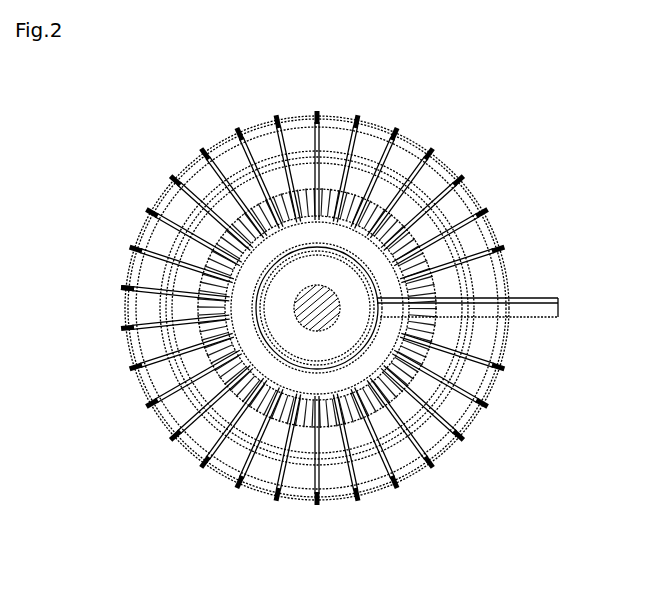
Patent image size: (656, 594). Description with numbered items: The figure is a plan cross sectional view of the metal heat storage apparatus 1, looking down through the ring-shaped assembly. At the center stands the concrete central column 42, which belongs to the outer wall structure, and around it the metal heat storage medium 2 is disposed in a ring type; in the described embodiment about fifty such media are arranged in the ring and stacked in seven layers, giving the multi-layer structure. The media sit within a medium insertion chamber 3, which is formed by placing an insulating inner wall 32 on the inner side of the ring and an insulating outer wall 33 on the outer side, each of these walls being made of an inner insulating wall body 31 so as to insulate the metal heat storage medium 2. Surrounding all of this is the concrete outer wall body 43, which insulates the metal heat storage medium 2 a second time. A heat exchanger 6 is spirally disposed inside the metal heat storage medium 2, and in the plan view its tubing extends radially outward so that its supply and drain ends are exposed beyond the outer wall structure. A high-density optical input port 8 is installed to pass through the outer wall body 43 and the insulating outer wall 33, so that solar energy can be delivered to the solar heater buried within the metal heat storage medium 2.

The metal heat storage apparatus 1 is at (134, 151).
The metal heat storage medium 2 is at (228, 405).
The medium insertion chamber 3 is at (183, 339).
The inner insulating wall body 31 is at (83, 279).
The insulating inner wall 32 is at (252, 307).
The insulating outer wall 33 is at (124, 291).
The central column 42 is at (303, 281).
The outer wall body 43 is at (445, 161).
The heat exchanger 6 is at (550, 331).
The high-density optical input port 8 is at (491, 377).